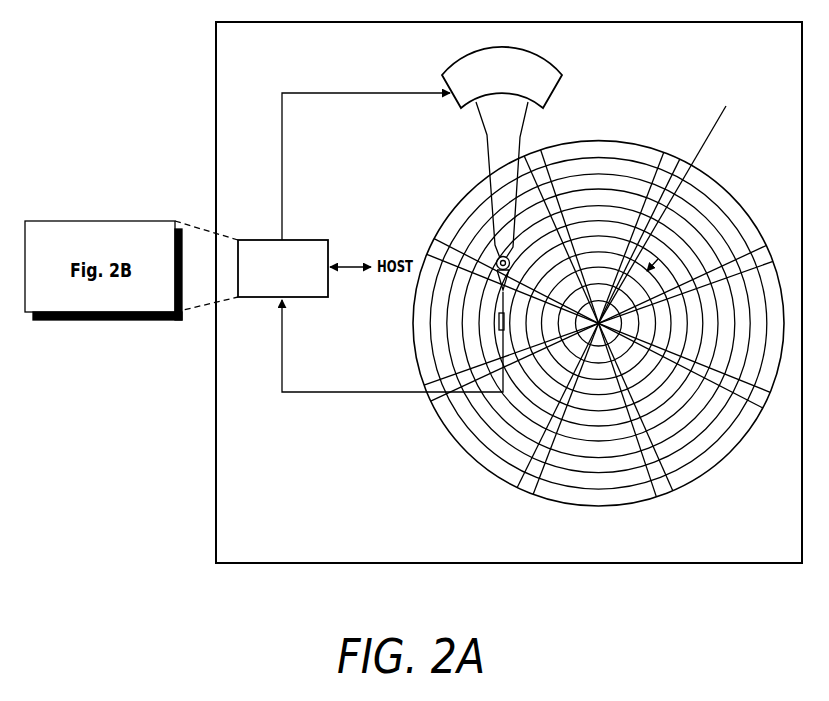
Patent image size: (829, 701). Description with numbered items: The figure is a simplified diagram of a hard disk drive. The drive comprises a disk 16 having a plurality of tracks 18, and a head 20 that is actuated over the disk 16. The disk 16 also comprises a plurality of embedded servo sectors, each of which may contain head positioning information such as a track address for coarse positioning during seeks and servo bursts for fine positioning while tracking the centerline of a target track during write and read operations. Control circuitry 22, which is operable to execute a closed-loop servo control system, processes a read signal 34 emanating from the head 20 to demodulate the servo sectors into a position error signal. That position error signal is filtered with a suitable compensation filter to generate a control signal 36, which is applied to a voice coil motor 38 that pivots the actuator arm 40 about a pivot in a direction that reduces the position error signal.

The disk 16 is at (727, 181).
The tracks 18 is at (601, 166).
The head 20 is at (494, 328).
The control circuitry 22 is at (313, 240).
The read signal 34 is at (365, 391).
The control signal 36 is at (282, 133).
The voice coil motor (VCM) 38 is at (455, 101).
The actuator arm 40 is at (487, 165).